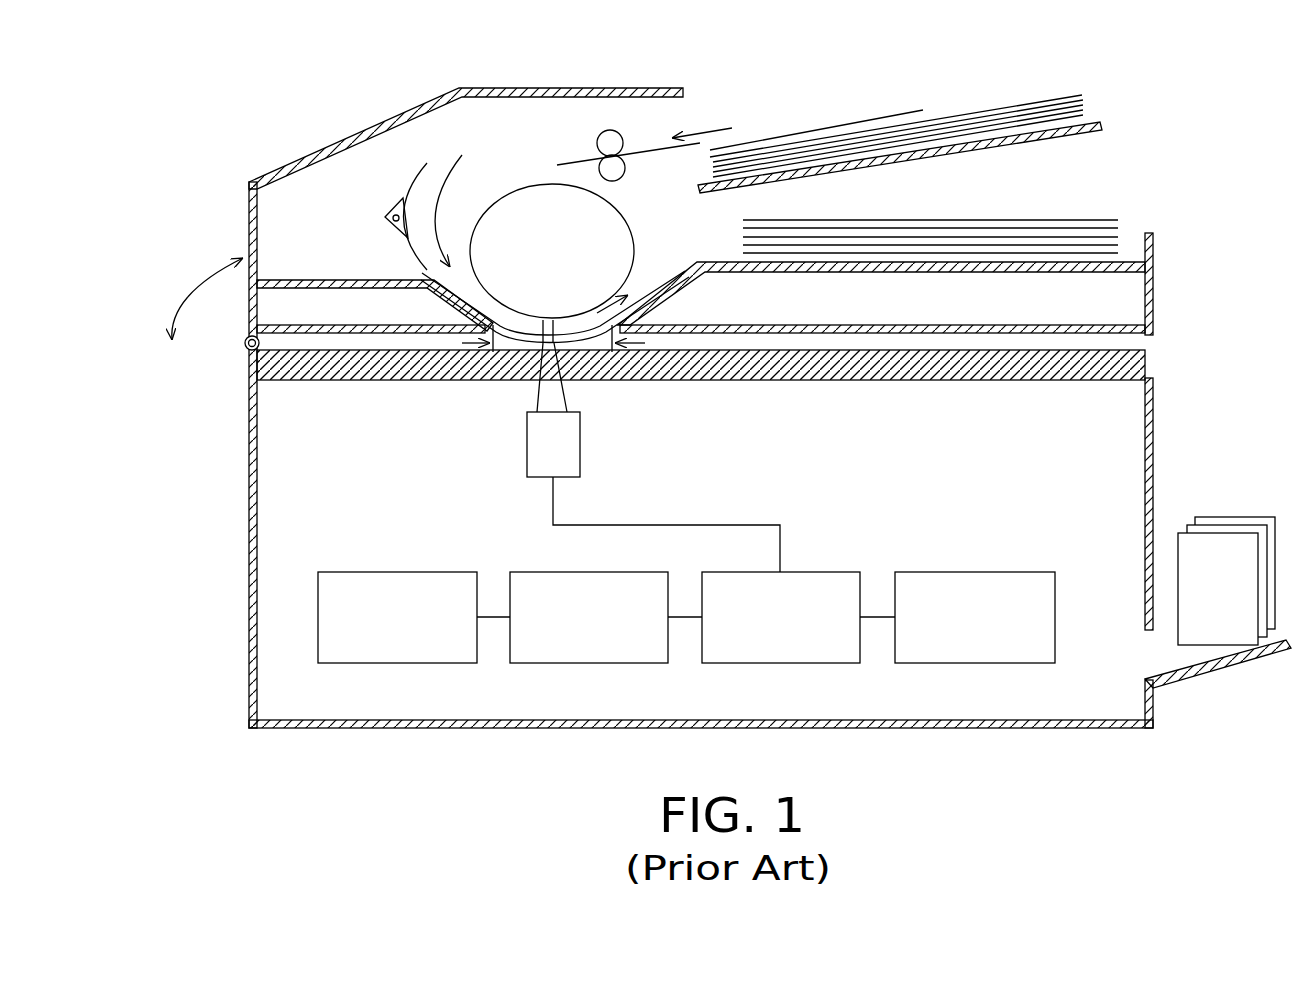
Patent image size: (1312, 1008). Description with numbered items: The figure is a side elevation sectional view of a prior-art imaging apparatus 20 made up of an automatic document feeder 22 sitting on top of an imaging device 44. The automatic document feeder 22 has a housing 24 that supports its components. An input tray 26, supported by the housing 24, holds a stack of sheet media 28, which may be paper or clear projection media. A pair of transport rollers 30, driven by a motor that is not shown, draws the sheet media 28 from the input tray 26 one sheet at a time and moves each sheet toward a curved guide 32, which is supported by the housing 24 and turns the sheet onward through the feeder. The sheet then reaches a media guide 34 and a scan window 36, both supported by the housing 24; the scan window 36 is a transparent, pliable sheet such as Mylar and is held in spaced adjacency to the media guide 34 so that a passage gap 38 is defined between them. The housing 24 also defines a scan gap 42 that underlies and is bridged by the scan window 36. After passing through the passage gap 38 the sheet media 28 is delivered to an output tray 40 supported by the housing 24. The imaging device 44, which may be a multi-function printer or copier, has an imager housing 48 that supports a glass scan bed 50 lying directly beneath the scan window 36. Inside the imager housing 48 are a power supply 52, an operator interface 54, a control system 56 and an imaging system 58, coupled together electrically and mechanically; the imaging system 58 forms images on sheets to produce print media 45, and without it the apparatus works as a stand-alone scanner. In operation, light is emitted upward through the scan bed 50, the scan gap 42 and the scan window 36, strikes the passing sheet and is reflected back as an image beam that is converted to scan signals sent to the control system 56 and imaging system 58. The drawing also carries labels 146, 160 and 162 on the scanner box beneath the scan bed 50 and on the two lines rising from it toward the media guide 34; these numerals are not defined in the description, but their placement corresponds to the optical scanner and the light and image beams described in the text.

The imaging apparatus 20 is at (668, 430).
The automatic document feeder 22 is at (893, 198).
The housing 24 is at (387, 125).
The input tray 26 is at (1100, 125).
The sheet media 28 is at (862, 113).
The transport rollers 30 is at (622, 147).
The curved guide 32 is at (397, 207).
The media guide 34 is at (528, 192).
The scan window 36 is at (655, 287).
The passage gap 38 is at (538, 326).
The output tray 40 is at (1127, 261).
The scan gap 42 is at (469, 348).
The imaging device 44 is at (1180, 465).
The print media 45 is at (1243, 520).
The imager housing 48 is at (1150, 397).
The scan bed 50 is at (834, 375).
The power supply 52 is at (380, 663).
The operator interface 54 is at (570, 663).
The control system 56 is at (764, 663).
The imaging system 58 is at (955, 663).
The sensor S 146 is at (573, 460).
The first sensing line 160 is at (537, 396).
The second sensing line 162 is at (570, 398).